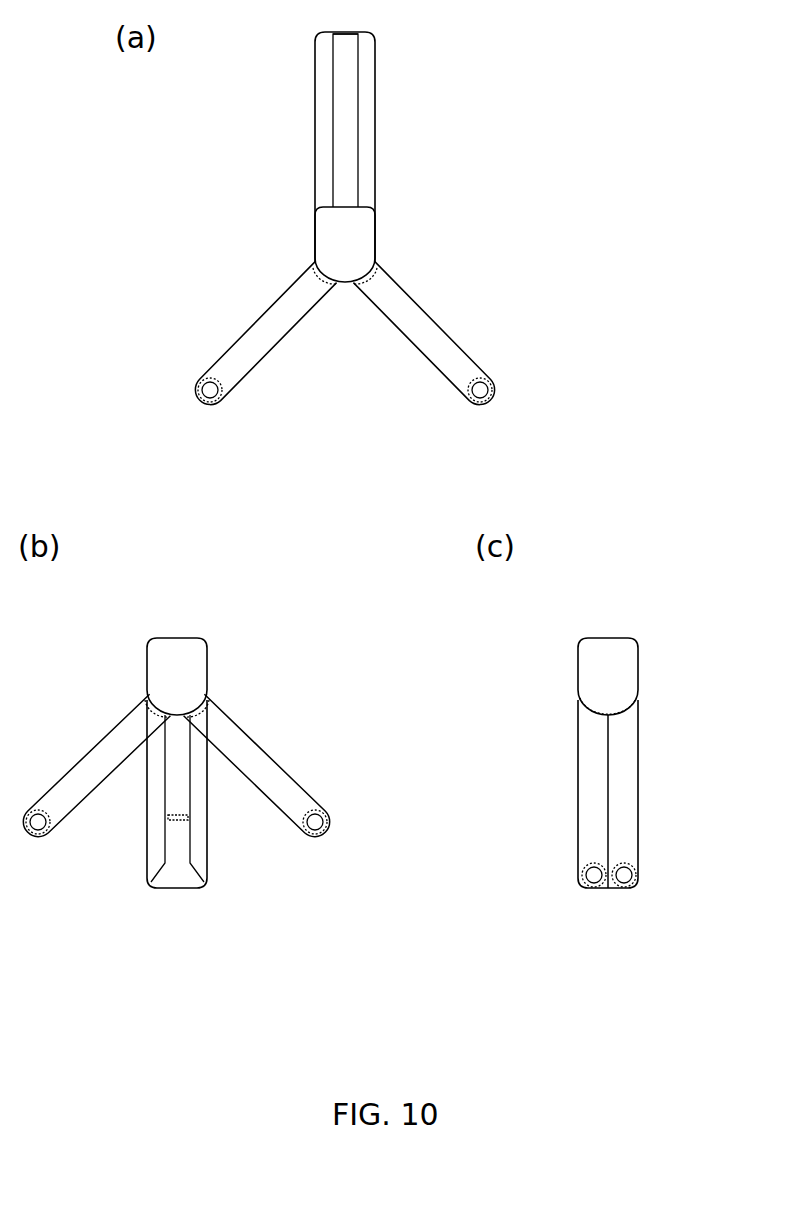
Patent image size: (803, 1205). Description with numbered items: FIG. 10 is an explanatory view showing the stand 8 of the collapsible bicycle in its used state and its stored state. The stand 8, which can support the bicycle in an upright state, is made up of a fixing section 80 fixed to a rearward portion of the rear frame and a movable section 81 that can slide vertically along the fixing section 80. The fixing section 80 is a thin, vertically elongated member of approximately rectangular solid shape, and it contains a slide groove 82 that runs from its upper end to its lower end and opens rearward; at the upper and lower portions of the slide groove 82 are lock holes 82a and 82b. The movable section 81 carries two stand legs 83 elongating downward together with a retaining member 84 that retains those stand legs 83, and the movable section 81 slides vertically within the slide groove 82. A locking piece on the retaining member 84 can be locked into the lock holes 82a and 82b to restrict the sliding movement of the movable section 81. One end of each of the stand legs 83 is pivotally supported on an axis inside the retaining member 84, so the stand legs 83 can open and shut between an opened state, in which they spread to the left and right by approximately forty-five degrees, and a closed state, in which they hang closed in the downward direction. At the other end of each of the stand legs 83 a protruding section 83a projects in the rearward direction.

The stand 8 is at (487, 178).
The fixing section 80 is at (388, 82).
The movable section 81 is at (348, 335).
The slide groove 82 is at (345, 105).
The lock hole 82a is at (177, 822).
The lock hole 82b is at (352, 31).
The stand leg 83 is at (255, 360).
The protruding section 83a is at (210, 393).
The retaining member 84 is at (368, 240).